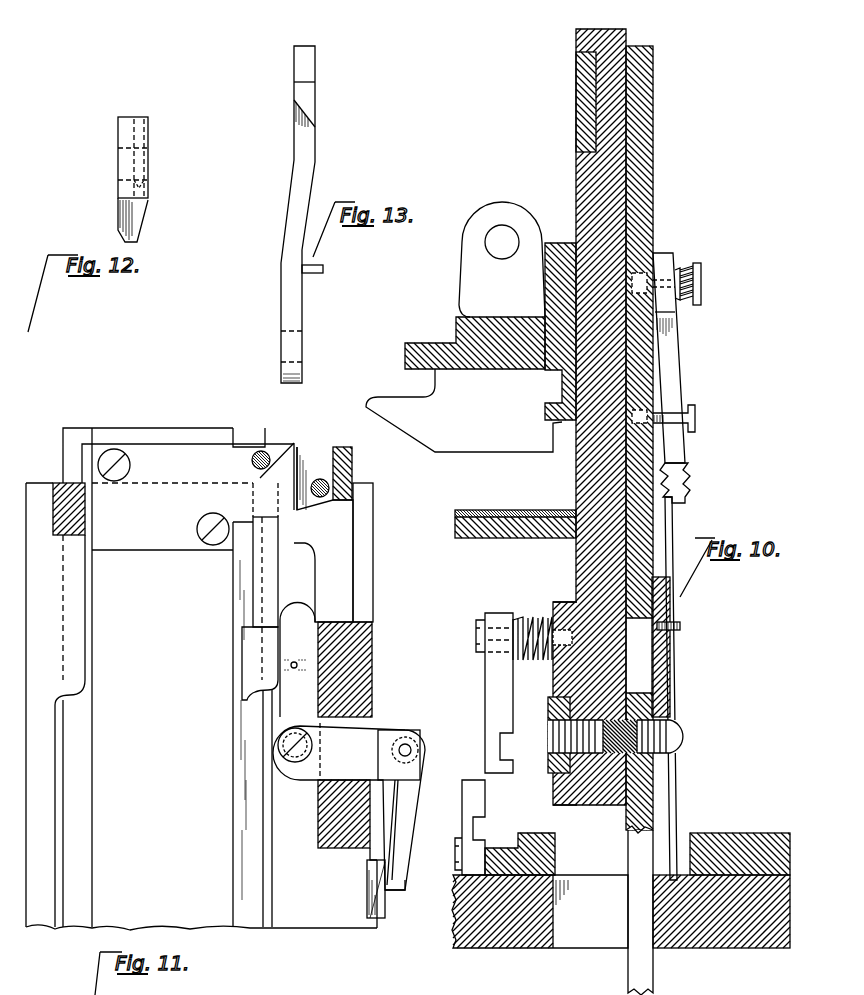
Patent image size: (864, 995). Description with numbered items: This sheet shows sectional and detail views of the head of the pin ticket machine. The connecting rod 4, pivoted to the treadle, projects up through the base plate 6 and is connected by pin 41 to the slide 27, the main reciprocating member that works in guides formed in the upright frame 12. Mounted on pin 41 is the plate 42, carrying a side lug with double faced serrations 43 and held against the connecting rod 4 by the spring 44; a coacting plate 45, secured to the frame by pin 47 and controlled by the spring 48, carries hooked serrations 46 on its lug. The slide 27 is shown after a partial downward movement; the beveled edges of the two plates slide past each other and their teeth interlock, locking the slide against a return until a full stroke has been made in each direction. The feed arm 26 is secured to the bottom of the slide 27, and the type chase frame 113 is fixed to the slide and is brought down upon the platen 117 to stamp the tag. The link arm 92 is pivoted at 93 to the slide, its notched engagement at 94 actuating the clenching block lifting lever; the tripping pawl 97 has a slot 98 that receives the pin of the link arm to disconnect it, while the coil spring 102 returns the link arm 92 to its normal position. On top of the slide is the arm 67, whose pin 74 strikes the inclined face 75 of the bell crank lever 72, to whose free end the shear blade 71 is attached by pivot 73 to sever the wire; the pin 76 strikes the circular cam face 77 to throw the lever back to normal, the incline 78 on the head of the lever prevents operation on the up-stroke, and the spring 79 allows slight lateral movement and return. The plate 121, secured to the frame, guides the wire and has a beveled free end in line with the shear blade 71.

In FIG. 10, the connecting rod 4 is at (645, 968).
In FIG. 10, the base plate 6 is at (543, 930).
In FIG. 10, the upright frame 12 is at (655, 210).
In FIG. 11, the upright frame 12 is at (47, 805).
In FIG. 10, the feed arm 26 is at (545, 765).
In FIG. 10, the slide 27 is at (625, 527).
In FIG. 11, the slide 27 is at (165, 428).
In FIG. 10, the pin 41 is at (683, 715).
In FIG. 10, the plate 42 is at (675, 608).
In FIG. 10, the serrations 43 is at (690, 470).
In FIG. 10, the spring 44 is at (680, 672).
In FIG. 10, the coacting plate 45 is at (675, 367).
In FIG. 10, the hooked serrations 46 is at (694, 483).
In FIG. 10, the pin 47 is at (703, 283).
In FIG. 10, the spring 48 is at (688, 262).
In FIG. 10, the arm 67 is at (578, 100).
In FIG. 11, the arm 67 is at (277, 443).
In FIG. 11, the shear blade 71 is at (397, 883).
In FIG. 13, the bell crank lever 72 is at (315, 190).
In FIG. 11, the bell crank lever 72 is at (355, 738).
In FIG. 11, the pivot 73 is at (412, 745).
In FIG. 11, the pin 74 is at (250, 462).
In FIG. 13, the inclined face 75 is at (310, 67).
In FIG. 11, the inclined face 75 is at (258, 475).
In FIG. 11, the pin 76 is at (330, 480).
In FIG. 11, the circular cam face 77 is at (300, 545).
In FIG. 13, the incline 78 is at (305, 112).
In FIG. 11, the spring 79 is at (286, 645).
In FIG. 10, the link arm 92 is at (503, 697).
In FIG. 10, the pivot 93 is at (478, 632).
In FIG. 10, the notched engagement 94 is at (548, 740).
In FIG. 10, the tripping pawl 97 is at (462, 805).
In FIG. 10, the slot 98 is at (480, 832).
In FIG. 10, the coil spring 102 is at (520, 610).
In FIG. 10, the type chase frame 113 is at (460, 305).
In FIG. 10, the platen 117 is at (470, 507).
In FIG. 12, the plate 121 is at (150, 160).
In FIG. 11, the plate 121 is at (397, 905).